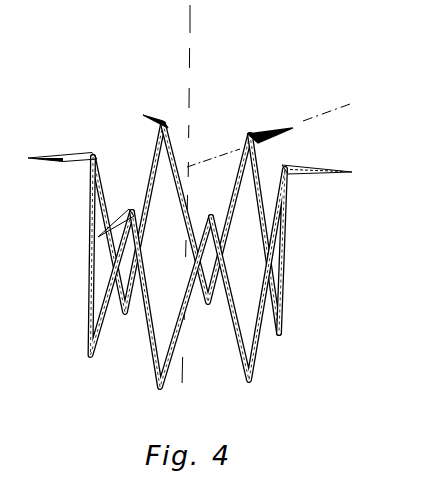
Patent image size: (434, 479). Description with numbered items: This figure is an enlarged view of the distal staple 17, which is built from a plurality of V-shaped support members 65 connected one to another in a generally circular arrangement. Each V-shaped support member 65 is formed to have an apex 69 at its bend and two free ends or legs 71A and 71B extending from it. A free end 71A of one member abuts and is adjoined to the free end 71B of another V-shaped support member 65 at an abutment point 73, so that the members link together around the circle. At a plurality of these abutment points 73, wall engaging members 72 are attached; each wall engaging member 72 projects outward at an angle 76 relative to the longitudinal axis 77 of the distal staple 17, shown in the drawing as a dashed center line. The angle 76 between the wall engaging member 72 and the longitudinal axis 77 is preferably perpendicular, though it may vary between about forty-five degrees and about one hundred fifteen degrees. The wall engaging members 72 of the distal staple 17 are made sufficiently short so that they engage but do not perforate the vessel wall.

The distal staple 17 is at (285, 278).
The V-shaped support member 65 is at (172, 350).
The apex 69 is at (88, 358).
The free end 71A is at (154, 152).
The free end 71B is at (172, 162).
The wall engaging member 72 is at (312, 165).
The abutment point 73 is at (168, 108).
The angle 76 is at (221, 160).
The longitudinal axis 77 is at (204, 23).